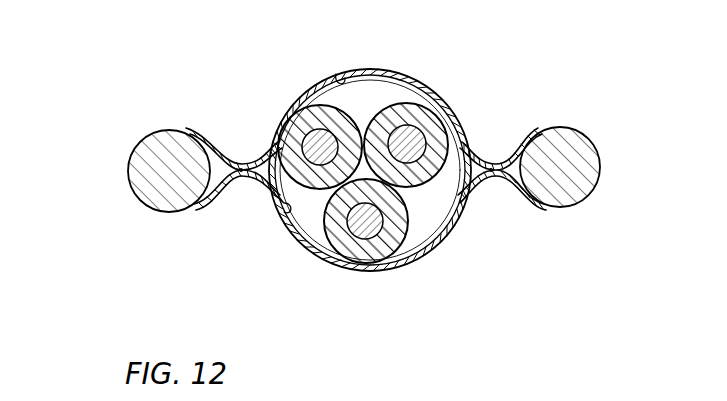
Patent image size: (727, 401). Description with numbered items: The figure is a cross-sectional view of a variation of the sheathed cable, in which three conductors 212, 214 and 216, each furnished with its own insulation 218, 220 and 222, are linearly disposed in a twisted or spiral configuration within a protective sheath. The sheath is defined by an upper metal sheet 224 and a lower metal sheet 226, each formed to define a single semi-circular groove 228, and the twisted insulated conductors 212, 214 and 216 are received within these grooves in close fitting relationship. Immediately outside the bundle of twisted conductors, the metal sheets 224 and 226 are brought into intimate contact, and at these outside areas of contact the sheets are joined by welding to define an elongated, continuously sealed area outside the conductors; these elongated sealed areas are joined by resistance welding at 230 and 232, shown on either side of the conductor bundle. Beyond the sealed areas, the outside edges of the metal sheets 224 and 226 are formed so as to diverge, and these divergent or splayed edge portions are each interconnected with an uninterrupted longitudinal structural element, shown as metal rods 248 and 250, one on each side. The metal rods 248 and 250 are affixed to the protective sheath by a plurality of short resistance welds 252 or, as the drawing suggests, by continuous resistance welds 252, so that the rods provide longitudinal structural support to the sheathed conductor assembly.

The conductor 212 is at (290, 120).
The conductor 214 is at (407, 258).
The conductor 216 is at (407, 144).
The insulation 218 is at (320, 110).
The insulation 220 is at (350, 247).
The insulation 222 is at (427, 118).
The upper metal sheet 224 is at (367, 69).
The lower metal sheet 226 is at (305, 250).
The semi-circular groove 228 is at (338, 76).
The resistance weld 230 is at (240, 168).
The resistance weld 232 is at (490, 172).
The metal rod 248 is at (130, 158).
The metal rod 250 is at (590, 142).
The resistance welds 252 is at (190, 203).